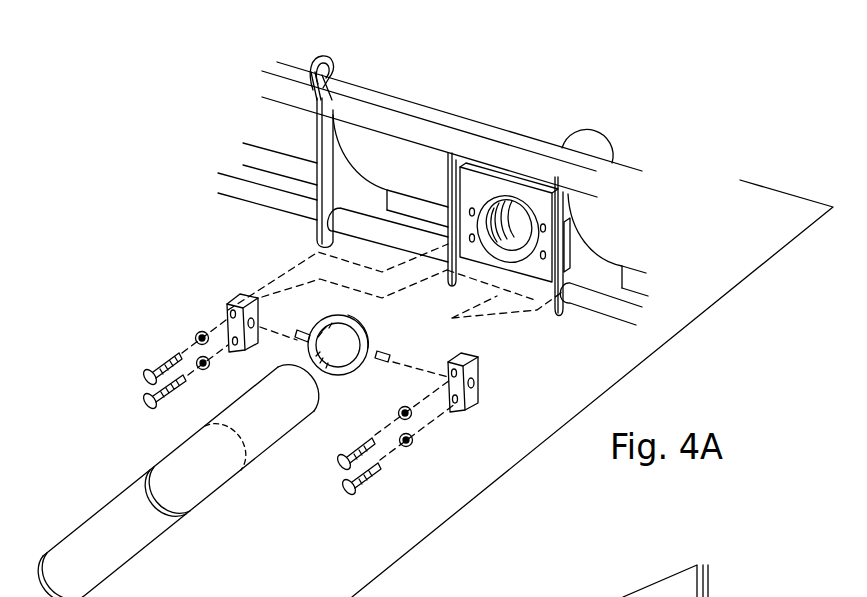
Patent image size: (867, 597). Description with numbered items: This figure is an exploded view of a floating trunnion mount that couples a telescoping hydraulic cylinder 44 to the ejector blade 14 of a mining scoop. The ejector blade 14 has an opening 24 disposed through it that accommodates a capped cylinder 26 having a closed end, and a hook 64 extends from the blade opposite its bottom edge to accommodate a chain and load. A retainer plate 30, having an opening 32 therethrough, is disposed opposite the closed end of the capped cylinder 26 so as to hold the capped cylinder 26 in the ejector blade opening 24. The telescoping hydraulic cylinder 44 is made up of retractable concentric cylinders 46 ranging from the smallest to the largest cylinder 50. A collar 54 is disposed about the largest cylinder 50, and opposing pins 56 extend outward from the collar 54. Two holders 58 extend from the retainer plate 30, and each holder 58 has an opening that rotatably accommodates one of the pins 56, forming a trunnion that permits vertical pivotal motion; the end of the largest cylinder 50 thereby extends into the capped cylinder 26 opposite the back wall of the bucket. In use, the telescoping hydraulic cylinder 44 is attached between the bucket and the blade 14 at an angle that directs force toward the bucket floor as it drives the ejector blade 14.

The ejector blade 14 is at (398, 100).
The opening 24 is at (528, 205).
The capped cylinder 26 is at (592, 144).
The retainer plate 30 is at (543, 280).
The opening 32 is at (530, 207).
The telescoping hydraulic cylinder 44 is at (235, 476).
The retractable concentric cylinders 46 is at (200, 508).
The largest cylinder 50 is at (282, 423).
The collar 54 is at (363, 312).
The pins 56 is at (300, 347).
The holders 58 is at (238, 297).
The hook 64 is at (322, 56).